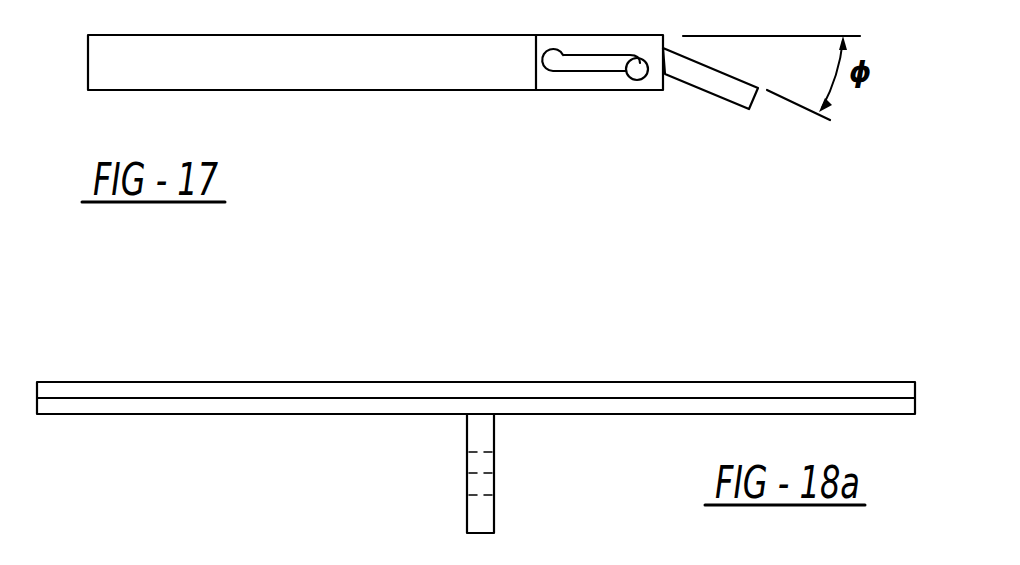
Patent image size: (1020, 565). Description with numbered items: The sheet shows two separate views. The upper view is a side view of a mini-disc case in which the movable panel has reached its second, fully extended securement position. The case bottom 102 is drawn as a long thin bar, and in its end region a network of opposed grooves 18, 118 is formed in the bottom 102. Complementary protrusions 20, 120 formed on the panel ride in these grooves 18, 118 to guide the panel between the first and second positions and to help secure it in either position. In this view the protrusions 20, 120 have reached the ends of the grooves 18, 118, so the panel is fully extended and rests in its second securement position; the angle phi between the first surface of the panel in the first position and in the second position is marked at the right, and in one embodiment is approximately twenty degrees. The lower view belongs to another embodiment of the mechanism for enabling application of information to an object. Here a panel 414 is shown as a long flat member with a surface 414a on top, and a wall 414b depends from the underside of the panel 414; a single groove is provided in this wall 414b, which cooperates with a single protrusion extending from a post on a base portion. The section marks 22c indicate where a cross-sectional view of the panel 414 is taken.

In FIG. 17, the bottom 102 is at (315, 92).
In FIG. 17, the groove 18 is at (574, 109).
In FIG. 17, the groove 118 is at (592, 72).
In FIG. 17, the protrusion 20 is at (657, 118).
In FIG. 17, the protrusion 120 is at (638, 69).
In FIG. 18A, the panel 414 is at (476, 421).
In FIG. 18A, the horizontal plate 414a is at (145, 381).
In FIG. 18A, the wall 414b is at (495, 512).
In FIG. 18A, the section line 22c is at (271, 480).